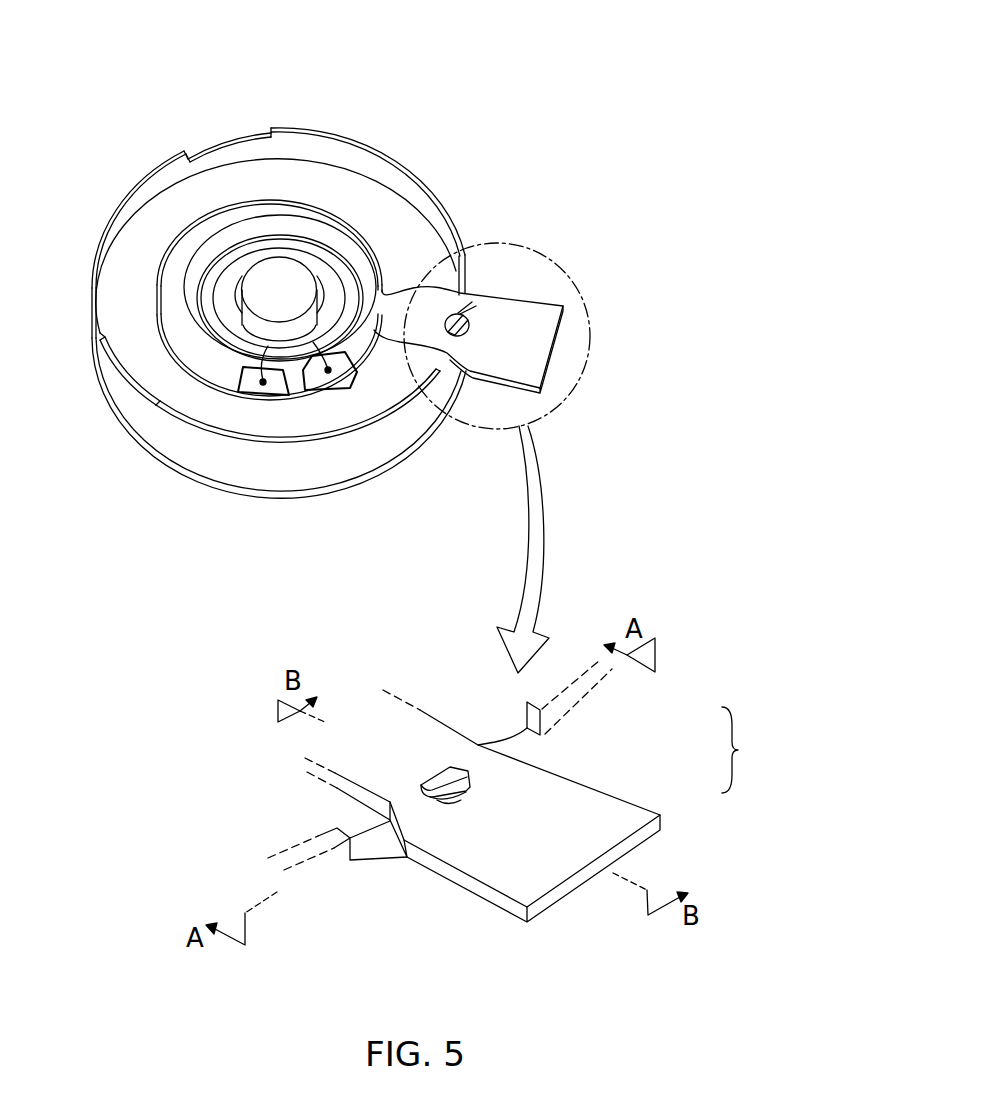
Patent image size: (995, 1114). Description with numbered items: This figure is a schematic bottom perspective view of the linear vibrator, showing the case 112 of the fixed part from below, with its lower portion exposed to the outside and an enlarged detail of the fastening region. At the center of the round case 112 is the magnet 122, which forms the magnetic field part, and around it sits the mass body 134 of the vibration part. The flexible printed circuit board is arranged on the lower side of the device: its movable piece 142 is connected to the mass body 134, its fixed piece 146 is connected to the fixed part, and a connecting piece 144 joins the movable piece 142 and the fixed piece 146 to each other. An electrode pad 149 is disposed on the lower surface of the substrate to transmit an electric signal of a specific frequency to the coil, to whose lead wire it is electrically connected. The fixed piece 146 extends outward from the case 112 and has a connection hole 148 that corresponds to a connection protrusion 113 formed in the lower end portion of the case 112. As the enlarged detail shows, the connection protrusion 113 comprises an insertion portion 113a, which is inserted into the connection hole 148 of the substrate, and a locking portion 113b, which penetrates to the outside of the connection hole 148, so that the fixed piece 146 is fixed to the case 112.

The case 112 is at (391, 177).
The magnet 122 is at (285, 273).
The mass body 134 is at (411, 226).
The connection protrusion 113 is at (466, 310).
The insertion portion 113a is at (471, 788).
The locking portion 113b is at (462, 768).
The connection hole 148 is at (470, 308).
The fixed piece 146 is at (542, 340).
The connecting piece 144 is at (183, 337).
The electrode pad 149 is at (275, 387).
The movable piece 142 is at (293, 382).